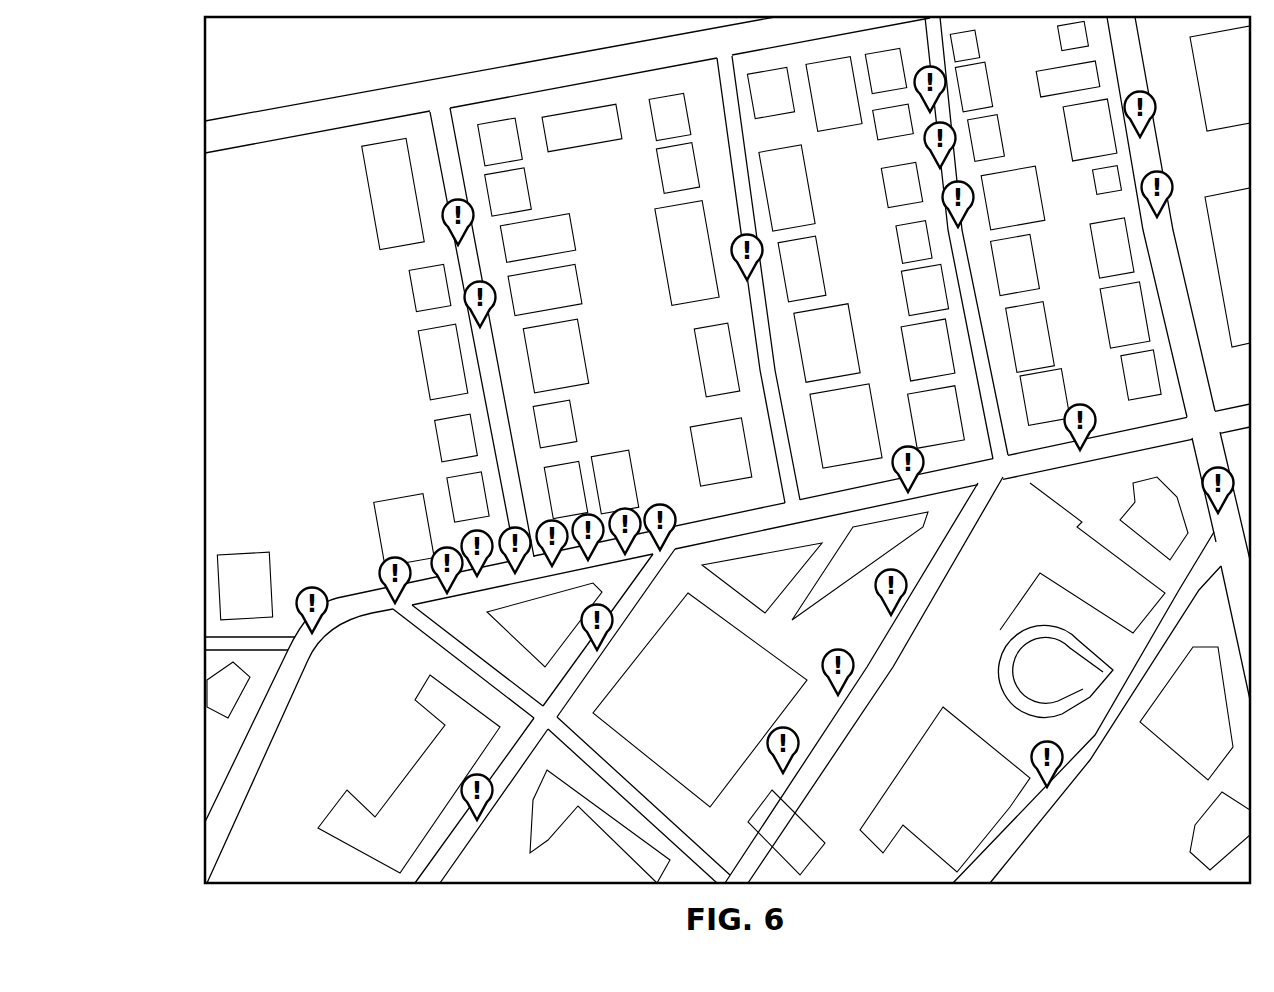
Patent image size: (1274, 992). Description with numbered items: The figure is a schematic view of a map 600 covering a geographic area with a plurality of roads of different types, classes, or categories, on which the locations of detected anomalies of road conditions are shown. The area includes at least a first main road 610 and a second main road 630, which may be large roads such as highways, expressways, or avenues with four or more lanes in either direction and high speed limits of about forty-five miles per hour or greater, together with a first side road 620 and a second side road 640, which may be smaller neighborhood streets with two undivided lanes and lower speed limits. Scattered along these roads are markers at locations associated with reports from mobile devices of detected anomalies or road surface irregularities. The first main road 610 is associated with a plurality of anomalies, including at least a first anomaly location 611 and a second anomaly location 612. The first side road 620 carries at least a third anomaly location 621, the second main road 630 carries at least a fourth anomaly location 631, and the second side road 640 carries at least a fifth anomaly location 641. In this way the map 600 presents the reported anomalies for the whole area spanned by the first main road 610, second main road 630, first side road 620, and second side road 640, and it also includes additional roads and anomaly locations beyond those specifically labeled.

The map 600 is at (150, 216).
The first main road 610 is at (357, 618).
The first anomaly location 611 is at (381, 578).
The second anomaly location 612 is at (661, 500).
The first side road 620 is at (950, 258).
The third anomaly location 621 is at (926, 146).
The second main road 630 is at (1166, 150).
The fourth anomaly location 631 is at (1150, 195).
The second side road 640 is at (924, 598).
The fifth anomaly location 641 is at (862, 680).